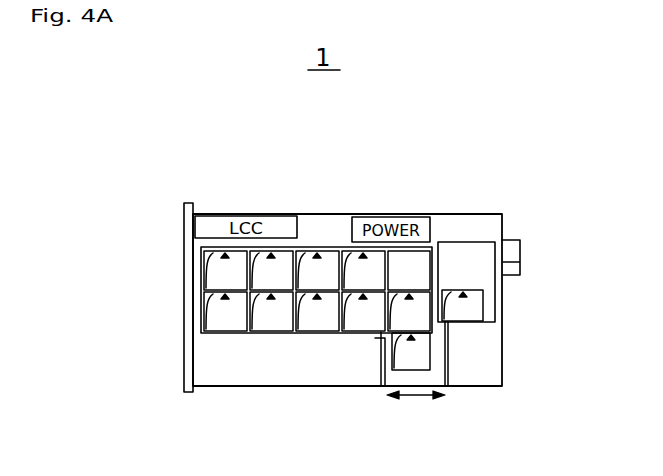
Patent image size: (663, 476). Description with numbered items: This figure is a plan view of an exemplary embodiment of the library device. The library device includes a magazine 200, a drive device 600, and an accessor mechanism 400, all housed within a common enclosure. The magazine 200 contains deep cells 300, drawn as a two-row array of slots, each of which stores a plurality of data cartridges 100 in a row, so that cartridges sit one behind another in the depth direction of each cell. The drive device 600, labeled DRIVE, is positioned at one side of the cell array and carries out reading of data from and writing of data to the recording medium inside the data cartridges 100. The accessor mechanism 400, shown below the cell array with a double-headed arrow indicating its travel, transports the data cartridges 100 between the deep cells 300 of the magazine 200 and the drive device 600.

The data cartridge 100 is at (419, 350).
The magazine 200 is at (194, 266).
The deep cell 300 is at (427, 250).
The accessor mechanism 400 is at (439, 368).
The drive device 600 is at (479, 252).